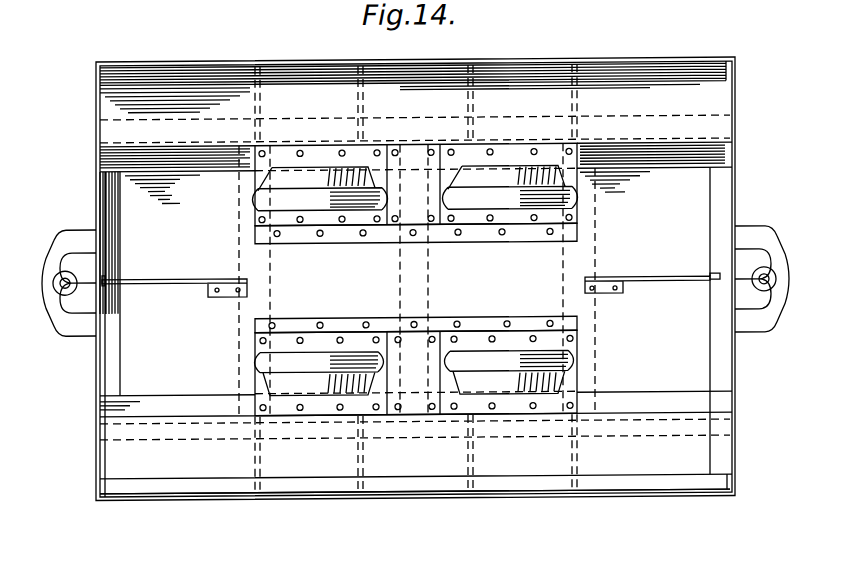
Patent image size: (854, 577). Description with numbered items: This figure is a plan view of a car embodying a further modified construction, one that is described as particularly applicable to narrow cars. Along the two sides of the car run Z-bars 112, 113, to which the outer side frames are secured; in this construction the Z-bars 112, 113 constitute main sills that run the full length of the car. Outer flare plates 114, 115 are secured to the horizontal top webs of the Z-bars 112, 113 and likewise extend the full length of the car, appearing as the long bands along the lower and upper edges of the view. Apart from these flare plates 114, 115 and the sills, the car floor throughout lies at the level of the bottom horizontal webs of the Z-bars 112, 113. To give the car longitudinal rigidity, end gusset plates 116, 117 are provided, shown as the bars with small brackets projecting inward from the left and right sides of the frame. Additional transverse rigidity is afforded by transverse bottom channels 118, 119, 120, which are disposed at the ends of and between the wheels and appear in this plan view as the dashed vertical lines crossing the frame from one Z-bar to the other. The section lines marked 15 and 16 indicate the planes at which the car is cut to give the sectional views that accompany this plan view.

The section line 15- 15 is at (394, 291).
The section line 16- 16 is at (85, 350).
The Z-bar 112 is at (179, 403).
The Z-bar 113 is at (209, 170).
The outer flare plate 114 is at (416, 453).
The outer flare plate 115 is at (415, 102).
The end gusset plate 116 is at (168, 281).
The end gusset plate 117 is at (658, 281).
The transverse bottom channel 118 is at (264, 274).
The transverse bottom channel 119 is at (428, 287).
The transverse bottom channel 120 is at (597, 322).